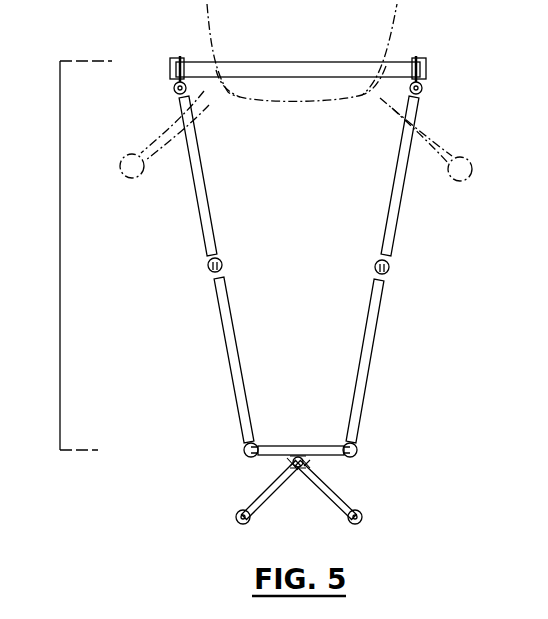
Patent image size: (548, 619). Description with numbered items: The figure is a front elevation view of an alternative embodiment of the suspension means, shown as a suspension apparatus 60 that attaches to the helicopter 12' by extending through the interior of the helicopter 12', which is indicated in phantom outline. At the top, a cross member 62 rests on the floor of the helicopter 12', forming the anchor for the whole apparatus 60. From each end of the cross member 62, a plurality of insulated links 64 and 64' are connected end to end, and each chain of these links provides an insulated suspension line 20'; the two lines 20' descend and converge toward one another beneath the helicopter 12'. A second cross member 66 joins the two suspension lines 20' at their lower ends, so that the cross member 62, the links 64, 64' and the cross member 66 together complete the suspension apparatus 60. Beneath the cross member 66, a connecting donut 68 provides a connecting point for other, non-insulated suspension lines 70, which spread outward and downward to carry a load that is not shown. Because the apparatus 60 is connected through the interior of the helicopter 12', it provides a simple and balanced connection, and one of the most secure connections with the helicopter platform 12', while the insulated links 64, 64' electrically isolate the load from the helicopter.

The helicopter 12' is at (296, 92).
The insulated suspension line 20' is at (313, 284).
The suspension apparatus 60 is at (60, 264).
The cross member 62 is at (396, 63).
The insulated link 64 is at (392, 269).
The insulated link 64' is at (204, 269).
The cross member 66 is at (316, 430).
The connecting donut 68 is at (312, 464).
The non-insulated suspension lines 70 is at (332, 502).